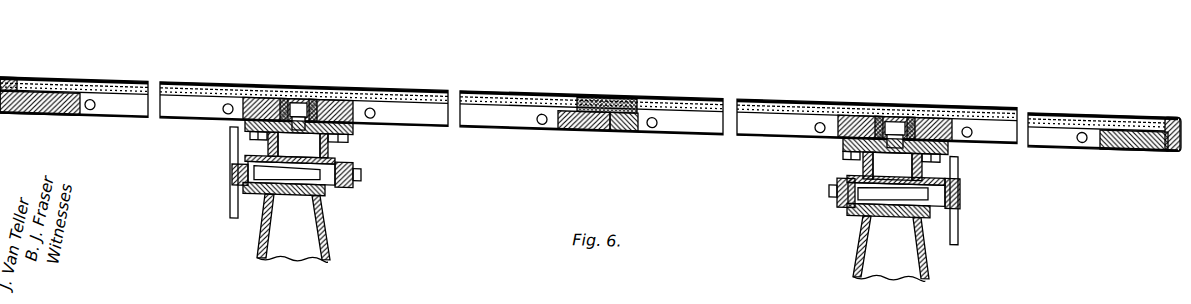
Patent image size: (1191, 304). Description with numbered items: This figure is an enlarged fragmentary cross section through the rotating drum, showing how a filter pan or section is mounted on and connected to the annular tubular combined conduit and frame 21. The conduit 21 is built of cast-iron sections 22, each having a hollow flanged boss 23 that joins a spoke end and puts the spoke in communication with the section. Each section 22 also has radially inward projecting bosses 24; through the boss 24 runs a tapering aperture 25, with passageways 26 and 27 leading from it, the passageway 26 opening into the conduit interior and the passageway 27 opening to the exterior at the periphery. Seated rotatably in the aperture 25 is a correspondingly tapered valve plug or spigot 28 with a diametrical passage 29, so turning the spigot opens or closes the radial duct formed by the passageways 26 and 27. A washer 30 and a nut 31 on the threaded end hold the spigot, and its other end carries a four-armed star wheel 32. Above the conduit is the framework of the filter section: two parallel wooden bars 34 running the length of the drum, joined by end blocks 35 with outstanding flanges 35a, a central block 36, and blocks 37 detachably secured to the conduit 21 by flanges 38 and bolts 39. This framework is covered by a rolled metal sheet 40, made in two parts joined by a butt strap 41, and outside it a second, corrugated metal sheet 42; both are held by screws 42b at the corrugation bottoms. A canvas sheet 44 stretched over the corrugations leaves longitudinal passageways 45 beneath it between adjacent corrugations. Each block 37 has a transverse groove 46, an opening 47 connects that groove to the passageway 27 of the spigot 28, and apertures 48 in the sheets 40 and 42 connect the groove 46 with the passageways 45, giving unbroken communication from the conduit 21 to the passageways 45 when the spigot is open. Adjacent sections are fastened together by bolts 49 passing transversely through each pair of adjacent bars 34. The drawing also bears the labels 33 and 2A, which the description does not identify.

The combined conduit and frame 21 is at (300, 142).
The hollow flanged boss 23 is at (326, 240).
The tapering aperture 25 is at (262, 190).
The passageway 26 is at (308, 175).
The passageway 27 is at (348, 151).
The valve plug or spigot 28 is at (245, 183).
The diametrical passage 29 is at (297, 176).
The washer 30 is at (238, 160).
The nut 31 is at (345, 167).
The star wheel 32 is at (232, 127).
The filler block 33 is at (598, 81).
The parallel bars 34 is at (522, 108).
The cross bars or blocks 35 is at (86, 113).
The outstanding flanges 35a is at (15, 78).
The cross bar or block 36 is at (582, 113).
The blocks 37 is at (358, 112).
The flanges 38 is at (983, 160).
The bolts 39 is at (233, 172).
The rolled metal sheet 40 is at (693, 96).
The butt strap 41 is at (615, 114).
The second sheet of metal 42 is at (1067, 90).
The screws 42b is at (62, 82).
The sheet of canvas 44 is at (490, 80).
The longitudinal passageways 45 is at (263, 291).
The groove 46 is at (305, 95).
The opening 47 is at (310, 92).
The apertures 48 is at (325, 299).
The bolts 49 is at (226, 105).
The base 2A is at (313, 185).
The sections 22 is at (760, 301).
The radially inward projecting bosses 24 is at (865, 301).